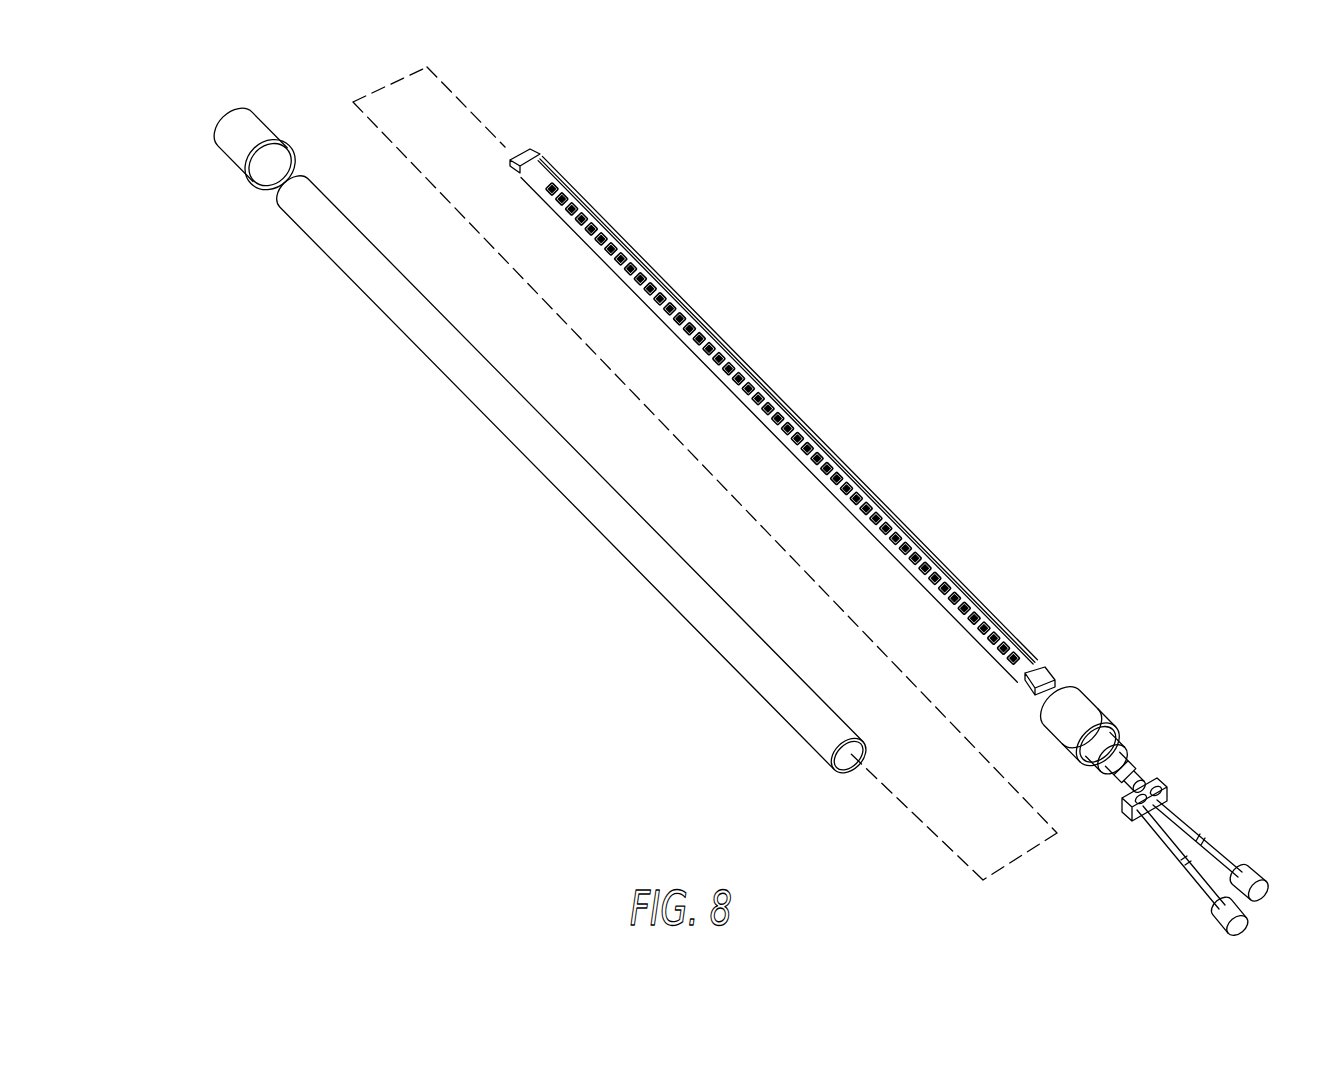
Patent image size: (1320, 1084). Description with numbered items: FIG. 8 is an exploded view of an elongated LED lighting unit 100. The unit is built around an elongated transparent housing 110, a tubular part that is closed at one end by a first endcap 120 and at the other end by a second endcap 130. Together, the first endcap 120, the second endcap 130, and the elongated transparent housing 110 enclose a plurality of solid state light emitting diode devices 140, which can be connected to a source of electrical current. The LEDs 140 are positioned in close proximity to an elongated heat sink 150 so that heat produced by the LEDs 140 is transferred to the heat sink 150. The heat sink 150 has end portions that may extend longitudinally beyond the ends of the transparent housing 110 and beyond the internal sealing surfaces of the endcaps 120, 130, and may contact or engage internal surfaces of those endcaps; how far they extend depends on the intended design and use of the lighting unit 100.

The elongated LED lighting unit 100 is at (1030, 277).
The elongated transparent housing 110 is at (686, 624).
The first endcap 120 is at (234, 168).
The second endcap 130 is at (1096, 707).
The solid state light emitting diode devices 140 is at (735, 374).
The elongated heat sink 150 is at (782, 422).